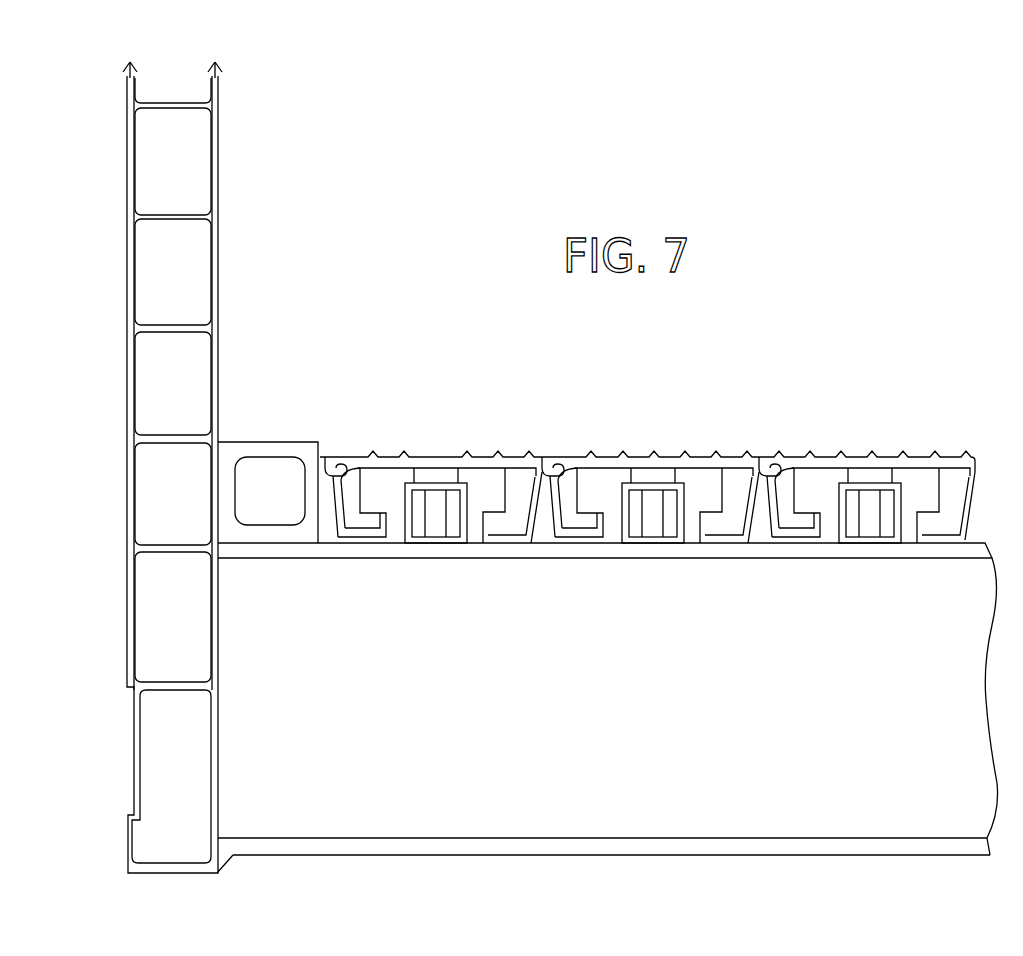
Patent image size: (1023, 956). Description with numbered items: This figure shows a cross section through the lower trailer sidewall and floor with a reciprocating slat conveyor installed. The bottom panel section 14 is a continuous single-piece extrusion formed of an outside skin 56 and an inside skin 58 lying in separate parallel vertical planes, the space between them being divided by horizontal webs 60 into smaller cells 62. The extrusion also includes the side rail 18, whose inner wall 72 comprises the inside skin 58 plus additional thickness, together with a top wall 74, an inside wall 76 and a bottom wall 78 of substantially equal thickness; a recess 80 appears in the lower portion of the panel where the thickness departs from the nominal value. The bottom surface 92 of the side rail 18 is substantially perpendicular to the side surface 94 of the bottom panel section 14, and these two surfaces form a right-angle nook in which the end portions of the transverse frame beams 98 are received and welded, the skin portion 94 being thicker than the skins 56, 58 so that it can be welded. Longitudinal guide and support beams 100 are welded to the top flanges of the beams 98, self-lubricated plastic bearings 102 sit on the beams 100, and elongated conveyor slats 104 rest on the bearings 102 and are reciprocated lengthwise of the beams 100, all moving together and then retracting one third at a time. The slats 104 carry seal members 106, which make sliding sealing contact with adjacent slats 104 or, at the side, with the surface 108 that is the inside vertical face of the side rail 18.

The bottom panel section 14 is at (262, 192).
The side rail 18 is at (292, 426).
The outside skin 56 is at (135, 165).
The inside skin 58 is at (217, 142).
The horizontal web 60 is at (197, 323).
The cell 62 is at (197, 375).
The inner wall 72 is at (219, 489).
The top wall 74 is at (266, 452).
The inside wall 76 is at (306, 491).
The bottom wall 78 is at (245, 536).
The recess 80 is at (134, 760).
The bottom surface 92 is at (302, 543).
The side surface 94 is at (218, 766).
The transverse frame beam 98 is at (604, 713).
The longitudinal guide and support beam 100 is at (468, 536).
The self-lubricated plastic bearing 102 is at (397, 532).
The conveyor slat 104 is at (483, 462).
The seal member 106 is at (340, 458).
The surface 108 is at (321, 452).